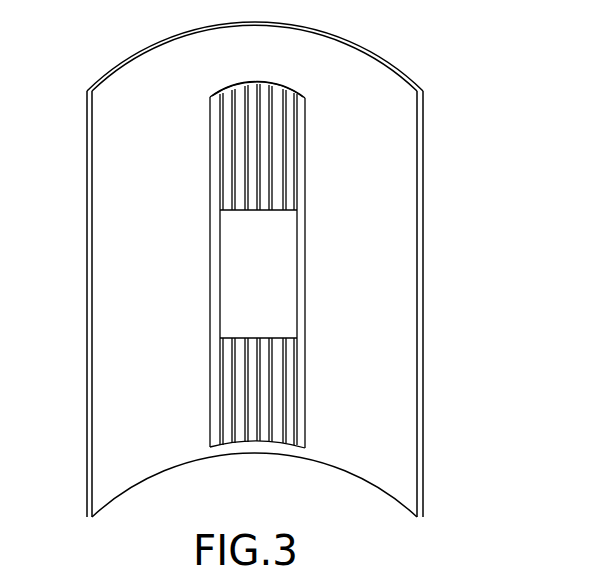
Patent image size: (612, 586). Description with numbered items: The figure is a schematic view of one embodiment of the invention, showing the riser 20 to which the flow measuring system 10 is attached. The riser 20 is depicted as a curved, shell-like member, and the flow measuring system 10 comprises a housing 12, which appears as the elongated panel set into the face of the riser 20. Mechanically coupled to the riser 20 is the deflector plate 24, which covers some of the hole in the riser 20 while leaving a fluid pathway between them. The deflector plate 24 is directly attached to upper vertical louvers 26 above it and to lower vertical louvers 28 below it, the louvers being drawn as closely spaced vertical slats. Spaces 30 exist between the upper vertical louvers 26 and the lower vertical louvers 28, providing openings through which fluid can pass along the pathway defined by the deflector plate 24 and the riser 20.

The flow measuring system 10 is at (298, 269).
The housing 12 is at (258, 264).
The riser 20 is at (118, 82).
The deflector plate 24 is at (283, 295).
The upper vertical louvers 26 is at (237, 170).
The lower vertical louvers 28 is at (230, 405).
The spaces 30 is at (305, 110).